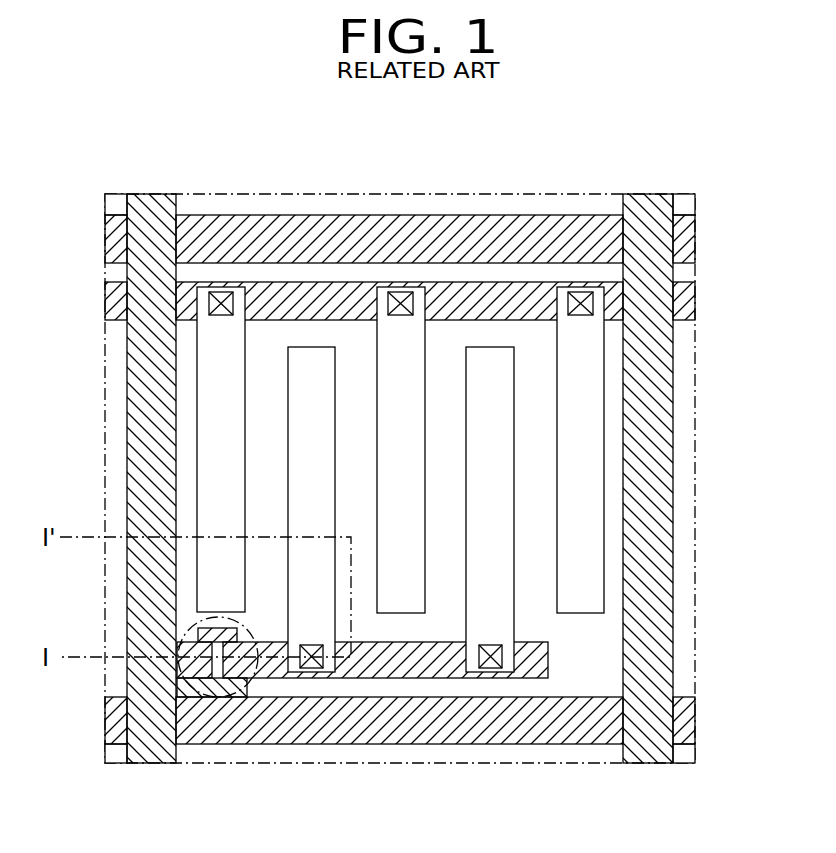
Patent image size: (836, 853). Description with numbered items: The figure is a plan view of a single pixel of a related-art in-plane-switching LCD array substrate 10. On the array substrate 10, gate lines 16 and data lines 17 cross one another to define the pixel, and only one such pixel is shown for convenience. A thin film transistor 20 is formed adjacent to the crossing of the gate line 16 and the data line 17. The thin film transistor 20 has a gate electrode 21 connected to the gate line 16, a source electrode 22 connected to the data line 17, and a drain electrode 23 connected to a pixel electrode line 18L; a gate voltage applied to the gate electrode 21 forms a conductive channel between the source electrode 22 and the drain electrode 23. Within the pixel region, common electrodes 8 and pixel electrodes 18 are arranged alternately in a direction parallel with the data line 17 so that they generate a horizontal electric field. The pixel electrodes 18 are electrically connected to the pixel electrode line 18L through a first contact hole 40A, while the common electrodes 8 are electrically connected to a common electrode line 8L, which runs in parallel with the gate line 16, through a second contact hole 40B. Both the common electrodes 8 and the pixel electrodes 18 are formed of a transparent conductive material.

The array substrate 10 is at (704, 200).
The data line 17 is at (130, 385).
The common electrode line 8L is at (683, 297).
The gate line 16 is at (683, 720).
The pixel electrode line 18L is at (393, 670).
The gate electrode 21 is at (223, 680).
The source electrode 22 is at (195, 688).
The drain electrode 23 is at (237, 668).
The thin film transistor 20 is at (174, 627).
The common electrode 8 is at (595, 440).
The pixel electrode 18 is at (505, 512).
The second contact hole 40B is at (215, 303).
The first contact hole 40A is at (490, 665).